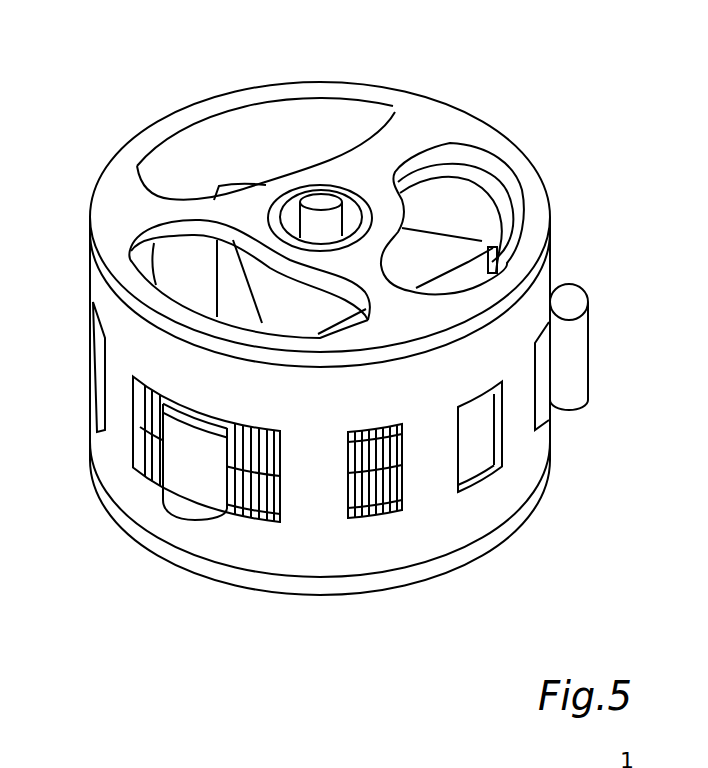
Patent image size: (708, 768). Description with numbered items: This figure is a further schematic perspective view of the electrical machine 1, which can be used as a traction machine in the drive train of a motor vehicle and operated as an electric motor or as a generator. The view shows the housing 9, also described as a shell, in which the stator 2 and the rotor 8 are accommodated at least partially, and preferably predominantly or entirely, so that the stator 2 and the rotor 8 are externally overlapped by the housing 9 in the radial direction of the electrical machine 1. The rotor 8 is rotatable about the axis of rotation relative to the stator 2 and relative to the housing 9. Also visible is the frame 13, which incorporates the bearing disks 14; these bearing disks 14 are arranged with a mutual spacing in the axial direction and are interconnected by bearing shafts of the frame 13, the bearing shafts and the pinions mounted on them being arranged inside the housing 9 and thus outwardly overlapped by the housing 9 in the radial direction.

The electrical machine 1 is at (419, 84).
The stator 2 is at (465, 188).
The rotor 8 is at (467, 253).
The housing 9 is at (105, 297).
The frame 13 is at (486, 574).
The bearing disks 14 is at (193, 112).